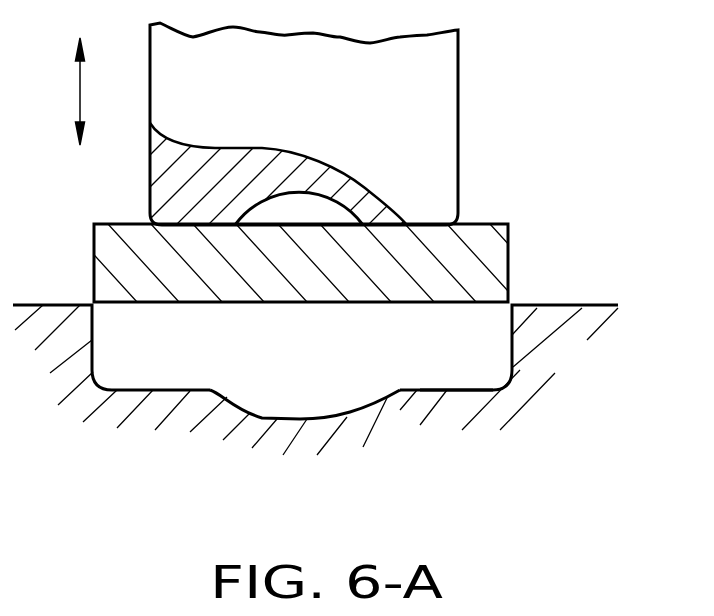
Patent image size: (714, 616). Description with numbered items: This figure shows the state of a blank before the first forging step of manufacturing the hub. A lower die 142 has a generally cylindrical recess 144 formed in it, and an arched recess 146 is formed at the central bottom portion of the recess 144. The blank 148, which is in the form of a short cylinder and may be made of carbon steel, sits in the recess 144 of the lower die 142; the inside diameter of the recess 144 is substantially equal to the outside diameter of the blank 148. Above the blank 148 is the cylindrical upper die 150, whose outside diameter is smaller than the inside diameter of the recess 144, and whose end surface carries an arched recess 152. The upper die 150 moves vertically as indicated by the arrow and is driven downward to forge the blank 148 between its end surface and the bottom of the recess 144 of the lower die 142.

The lower die 142 is at (550, 325).
The recess 144 is at (437, 378).
The arched recess 146 is at (307, 418).
The blank 148 is at (472, 245).
The upper die 150 is at (445, 94).
The arched recess 152 is at (293, 193).